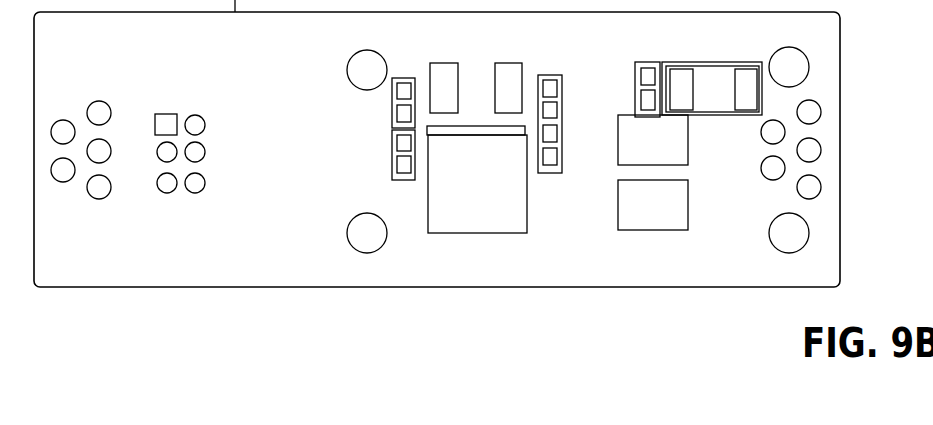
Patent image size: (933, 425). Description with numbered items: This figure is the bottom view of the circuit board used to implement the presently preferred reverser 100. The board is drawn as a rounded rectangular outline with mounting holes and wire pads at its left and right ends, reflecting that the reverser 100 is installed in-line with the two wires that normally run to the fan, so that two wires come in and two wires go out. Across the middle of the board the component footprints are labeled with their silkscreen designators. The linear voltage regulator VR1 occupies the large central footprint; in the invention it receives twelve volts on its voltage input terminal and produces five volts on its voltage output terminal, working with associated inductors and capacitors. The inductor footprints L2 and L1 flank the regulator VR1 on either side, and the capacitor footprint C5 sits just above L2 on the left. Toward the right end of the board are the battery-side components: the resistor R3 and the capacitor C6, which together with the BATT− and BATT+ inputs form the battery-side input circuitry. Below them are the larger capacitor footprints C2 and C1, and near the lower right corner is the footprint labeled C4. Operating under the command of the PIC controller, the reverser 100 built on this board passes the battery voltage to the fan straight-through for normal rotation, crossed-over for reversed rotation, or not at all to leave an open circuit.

The reverser 100 is at (467, 143).
The capacitor C5 connector C5 is at (389, 103).
The inductor L2 connector L2 is at (389, 155).
The linear voltage regulator VR1 is at (477, 133).
The inductor L1 connector L1 is at (564, 124).
The capacitor C6 is at (647, 75).
The resistor R3 is at (712, 74).
The capacitor C2 is at (667, 140).
The capacitor C1 is at (667, 205).
The capacitor C4 label C4 is at (745, 272).